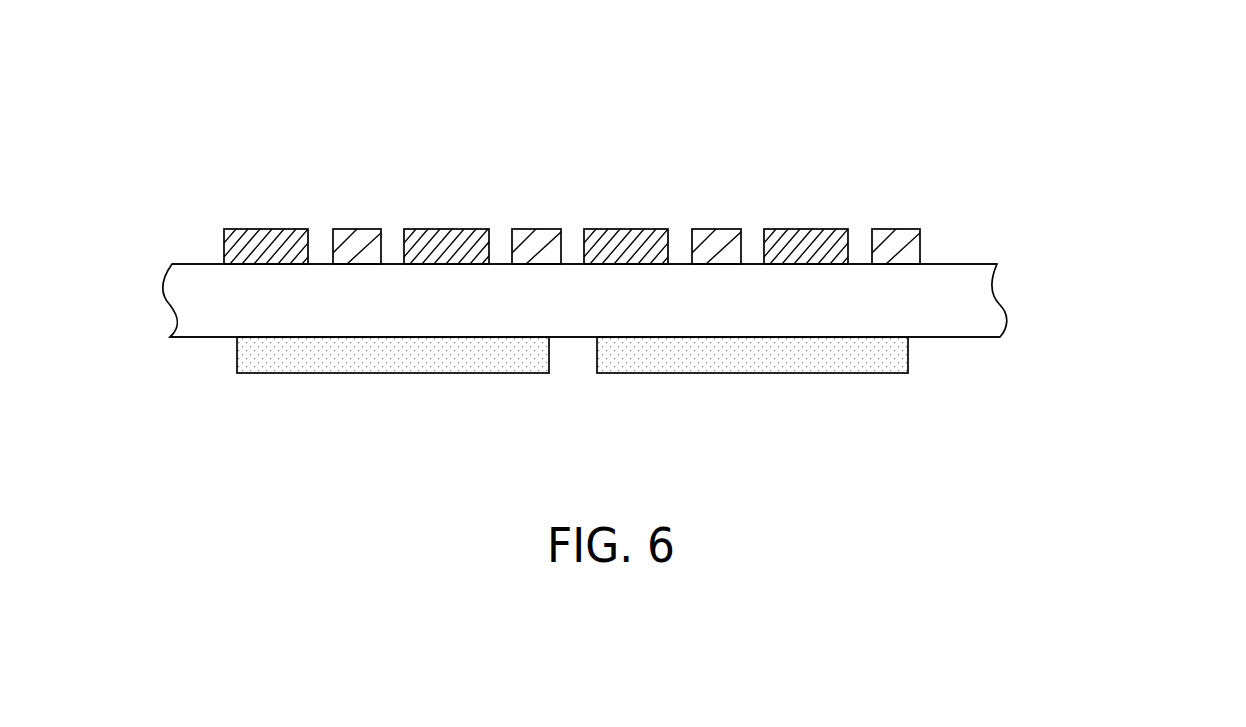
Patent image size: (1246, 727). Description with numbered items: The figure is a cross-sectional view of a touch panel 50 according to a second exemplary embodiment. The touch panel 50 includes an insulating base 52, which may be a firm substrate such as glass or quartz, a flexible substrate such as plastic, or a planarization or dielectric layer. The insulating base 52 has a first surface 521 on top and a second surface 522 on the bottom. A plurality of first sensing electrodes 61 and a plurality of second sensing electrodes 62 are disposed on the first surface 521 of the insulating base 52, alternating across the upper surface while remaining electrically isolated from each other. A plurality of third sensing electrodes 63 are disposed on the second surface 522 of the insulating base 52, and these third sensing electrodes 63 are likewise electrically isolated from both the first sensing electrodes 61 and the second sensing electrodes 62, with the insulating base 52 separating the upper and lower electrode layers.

The touch panel 50 is at (1139, 110).
The insulating base 52 is at (995, 296).
The first surface 521 is at (960, 264).
The second surface 522 is at (985, 338).
The first sensing electrodes 61 is at (266, 232).
The second sensing electrodes 62 is at (356, 232).
The third sensing electrodes 63 is at (418, 363).